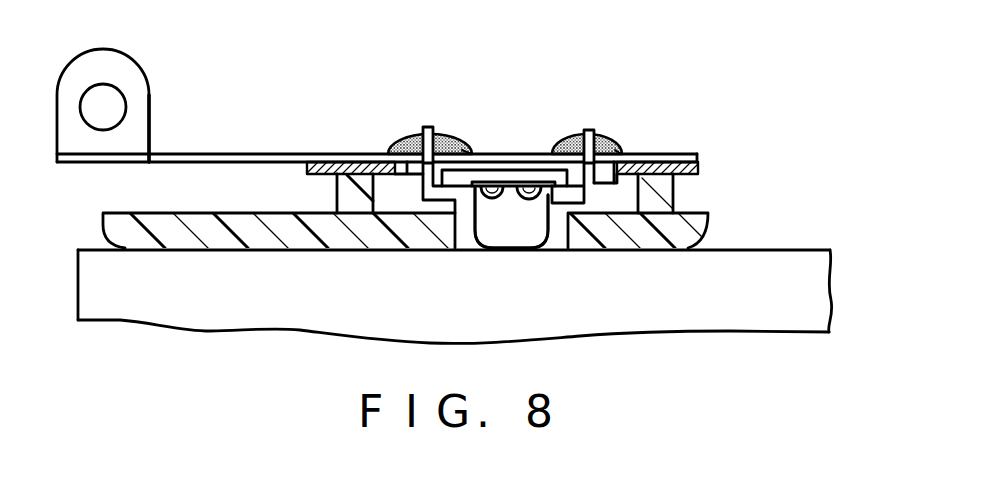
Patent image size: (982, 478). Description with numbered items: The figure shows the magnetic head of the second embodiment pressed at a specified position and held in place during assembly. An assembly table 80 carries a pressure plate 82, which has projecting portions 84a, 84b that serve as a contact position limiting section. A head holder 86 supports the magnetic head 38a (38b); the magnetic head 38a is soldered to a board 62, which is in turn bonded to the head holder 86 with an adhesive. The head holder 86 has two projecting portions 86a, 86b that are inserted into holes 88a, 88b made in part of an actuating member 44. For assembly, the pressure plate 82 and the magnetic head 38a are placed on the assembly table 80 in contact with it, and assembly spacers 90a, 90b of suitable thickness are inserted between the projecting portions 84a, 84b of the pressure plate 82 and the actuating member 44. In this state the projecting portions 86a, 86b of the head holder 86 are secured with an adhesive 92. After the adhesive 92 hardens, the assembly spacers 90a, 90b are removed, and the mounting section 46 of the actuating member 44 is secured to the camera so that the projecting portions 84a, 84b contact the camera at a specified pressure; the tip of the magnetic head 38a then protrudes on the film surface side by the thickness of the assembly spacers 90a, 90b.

The magnetic head 38a is at (507, 248).
The magnetic head 38b is at (532, 249).
The actuating member 44 is at (224, 152).
The mounting section 46 is at (117, 106).
The board 62 is at (513, 184).
The assembly table 80 is at (762, 270).
The pressure plate 82 is at (708, 218).
The projecting portion 84a is at (345, 203).
The projecting portion 84b is at (675, 187).
The head holder 86 is at (432, 187).
The projecting portion 86a is at (431, 127).
The projecting portion 86b is at (592, 130).
The hole 88a is at (417, 137).
The hole 88b is at (580, 137).
The assembly spacer 90a is at (325, 162).
The assembly spacer 90b is at (666, 165).
The adhesive 92 is at (468, 152).